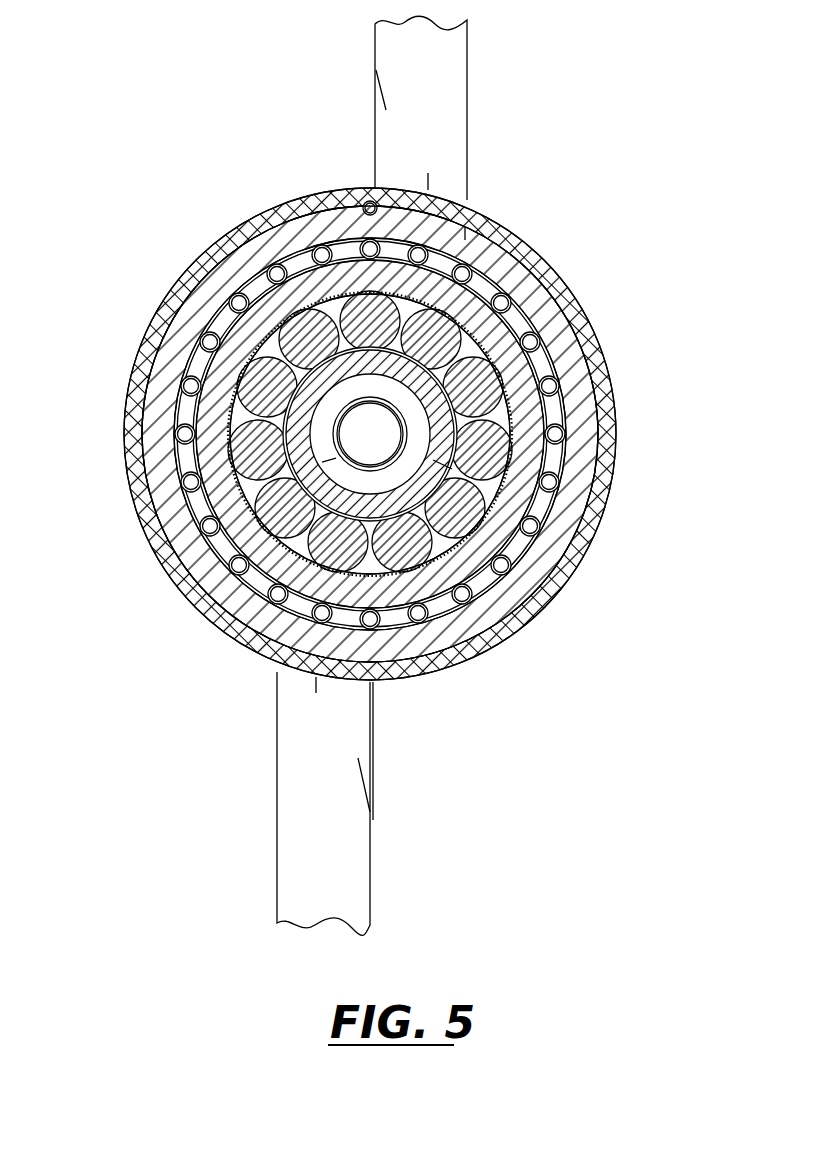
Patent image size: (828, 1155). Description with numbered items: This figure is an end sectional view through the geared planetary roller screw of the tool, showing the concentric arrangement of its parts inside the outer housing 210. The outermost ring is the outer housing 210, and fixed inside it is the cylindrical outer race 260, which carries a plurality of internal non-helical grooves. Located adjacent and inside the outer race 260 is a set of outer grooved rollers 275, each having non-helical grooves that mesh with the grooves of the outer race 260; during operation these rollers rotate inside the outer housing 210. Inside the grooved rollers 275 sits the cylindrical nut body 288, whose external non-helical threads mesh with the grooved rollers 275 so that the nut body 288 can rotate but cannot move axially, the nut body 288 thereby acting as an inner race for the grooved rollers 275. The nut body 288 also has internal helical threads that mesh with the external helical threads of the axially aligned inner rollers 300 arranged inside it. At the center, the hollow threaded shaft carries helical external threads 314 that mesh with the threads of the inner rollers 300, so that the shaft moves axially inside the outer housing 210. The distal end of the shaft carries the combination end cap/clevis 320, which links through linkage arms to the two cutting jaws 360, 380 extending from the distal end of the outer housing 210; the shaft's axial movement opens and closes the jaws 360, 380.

The outer housing 210 is at (245, 226).
The outer race 260 is at (482, 218).
The outer grooved rollers 275 is at (232, 298).
The inner rollers 300 is at (537, 330).
The nut body 288 is at (220, 368).
The combination end cap/clevis 320 is at (195, 508).
The helical external threads 314 is at (507, 495).
The cutting jaw 380 is at (362, 72).
The cutting jaw 360 is at (268, 725).